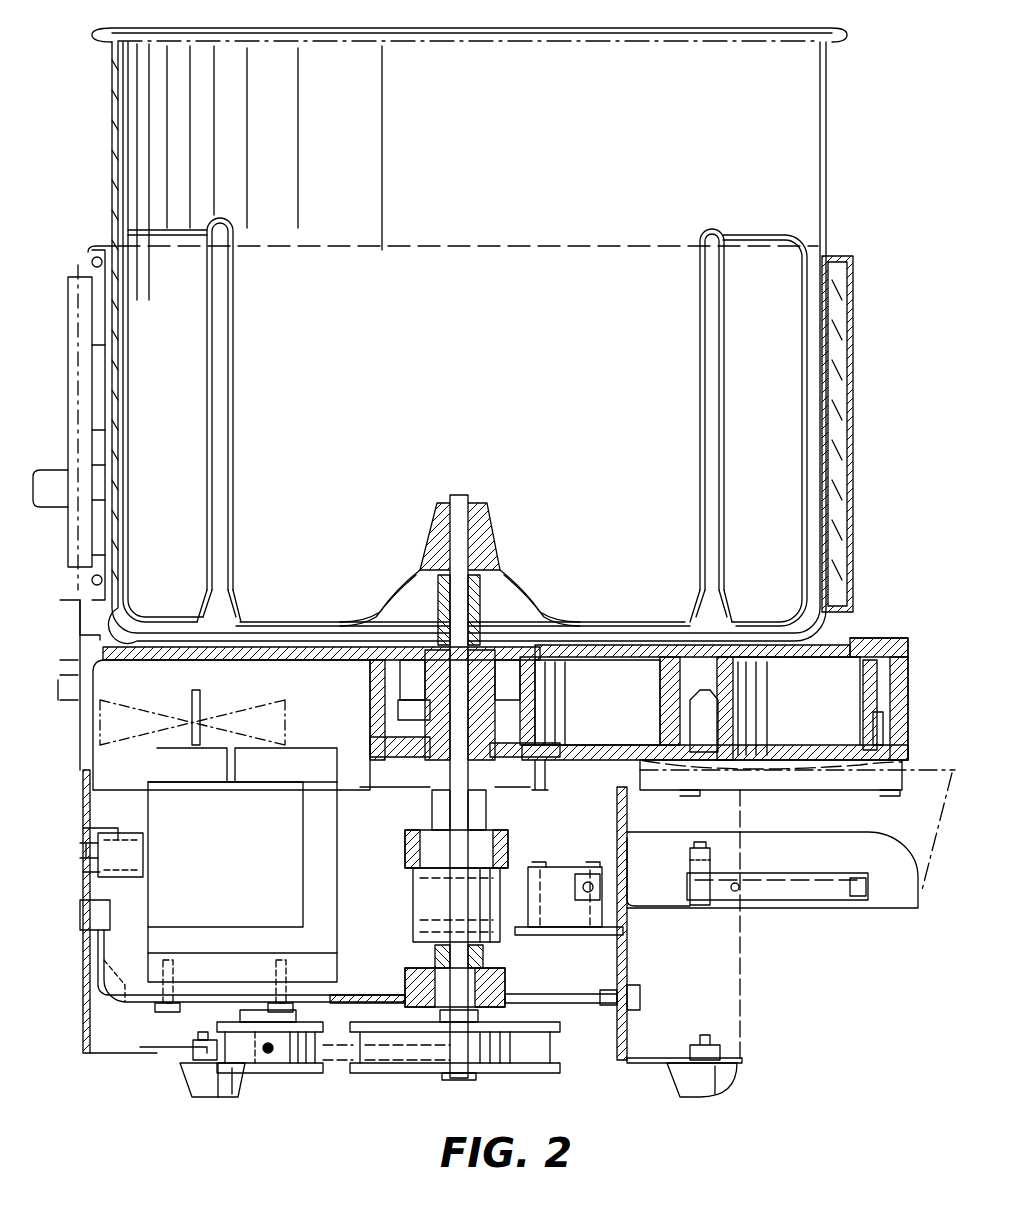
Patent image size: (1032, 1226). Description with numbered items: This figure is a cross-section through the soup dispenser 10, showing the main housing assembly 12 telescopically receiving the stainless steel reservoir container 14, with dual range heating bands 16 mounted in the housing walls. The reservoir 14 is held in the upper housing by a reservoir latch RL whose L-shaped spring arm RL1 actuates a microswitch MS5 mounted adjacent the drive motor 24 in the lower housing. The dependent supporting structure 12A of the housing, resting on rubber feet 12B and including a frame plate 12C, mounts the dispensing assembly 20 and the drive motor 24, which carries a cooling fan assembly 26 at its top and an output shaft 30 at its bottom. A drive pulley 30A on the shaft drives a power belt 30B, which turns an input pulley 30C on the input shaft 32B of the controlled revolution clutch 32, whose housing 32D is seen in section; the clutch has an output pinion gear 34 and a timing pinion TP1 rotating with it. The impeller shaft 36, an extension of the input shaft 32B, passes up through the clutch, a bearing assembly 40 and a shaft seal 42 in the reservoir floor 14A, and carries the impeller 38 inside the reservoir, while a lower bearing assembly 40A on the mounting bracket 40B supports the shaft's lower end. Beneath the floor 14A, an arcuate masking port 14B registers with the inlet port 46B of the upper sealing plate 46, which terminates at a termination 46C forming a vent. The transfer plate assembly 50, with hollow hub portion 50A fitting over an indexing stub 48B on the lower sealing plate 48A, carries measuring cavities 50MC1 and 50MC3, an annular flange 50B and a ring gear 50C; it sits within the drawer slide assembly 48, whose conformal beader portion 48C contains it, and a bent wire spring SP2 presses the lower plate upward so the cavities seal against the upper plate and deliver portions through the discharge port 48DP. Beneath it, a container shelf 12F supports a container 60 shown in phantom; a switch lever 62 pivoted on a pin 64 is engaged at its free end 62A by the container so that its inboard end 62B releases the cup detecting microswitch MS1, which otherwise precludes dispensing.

The soup dispenser 10 is at (883, 188).
The main housing assembly 12 is at (853, 485).
The dependent supporting structure 12A is at (83, 1005).
The rubber feet 12B is at (197, 1080).
The frame plate 12C is at (344, 661).
The container shelf 12F is at (808, 910).
The reservoir container 14 is at (826, 122).
The reservoir floor 14A is at (312, 636).
The masking port 14B is at (610, 636).
The heating bands 16 is at (836, 532).
The dispensing assembly 20 is at (850, 678).
The drive motor 24 is at (250, 888).
The cooling fan assembly 26 is at (286, 724).
The output shaft 30 is at (270, 1078).
The drive pulley 30A is at (243, 1075).
The power belt 30B is at (342, 1062).
The input pulley 30C is at (416, 1075).
The controlled revolution clutch 32 is at (455, 917).
The input shaft 32B is at (462, 1080).
The gear housing 32D is at (410, 898).
The output pinion gear 34 is at (408, 702).
The impeller shaft 36 is at (500, 578).
The impeller 38 is at (771, 553).
The bearing assembly 40 is at (540, 690).
The lower bearing assembly 40A is at (506, 986).
The mounting bracket 40B is at (345, 996).
The shaft seal 42 is at (480, 606).
The upper sealing plate 46 is at (722, 645).
The inlet port 46B is at (645, 650).
The termination of upper sealing plate 46C is at (840, 650).
The drawer slide assembly 48 is at (912, 688).
The lower sealing plate 48A is at (630, 732).
The indexing stub 48B is at (708, 726).
The conformal beader portion 48C is at (892, 682).
The discharge port 48DP is at (862, 768).
The transfer plate assembly 50 is at (878, 670).
The hollow hub portion 50A is at (745, 690).
The upper outer peripheral annular flange 50B is at (882, 702).
The ring gear 50C is at (884, 736).
The measuring cavity 50MC1 is at (653, 690).
The measuring cavity 50MC3 is at (873, 746).
The container 60 is at (632, 918).
The switch lever 62 is at (800, 882).
The free end of switch lever 62A is at (870, 890).
The inboard end of switch lever 62B is at (582, 880).
The pin 64 is at (708, 852).
The cup detecting microswitch MS1 is at (590, 925).
The microswitch MS5 is at (135, 855).
The reservoir latch RL is at (56, 470).
The L-shaped spring arm RL1 is at (73, 862).
The bent wire spring SP2 is at (542, 792).
The timing pinion TP1 is at (480, 814).